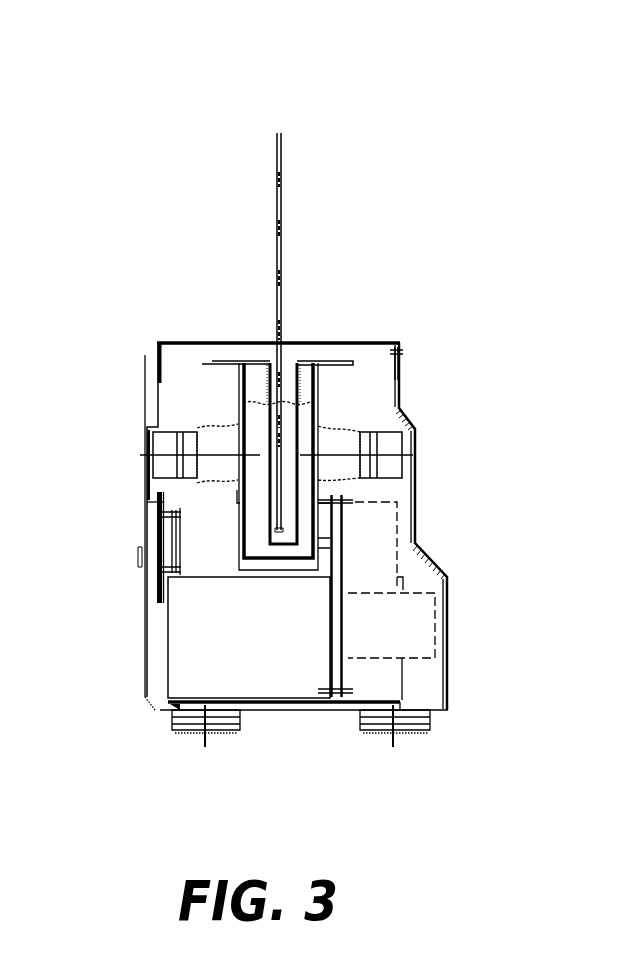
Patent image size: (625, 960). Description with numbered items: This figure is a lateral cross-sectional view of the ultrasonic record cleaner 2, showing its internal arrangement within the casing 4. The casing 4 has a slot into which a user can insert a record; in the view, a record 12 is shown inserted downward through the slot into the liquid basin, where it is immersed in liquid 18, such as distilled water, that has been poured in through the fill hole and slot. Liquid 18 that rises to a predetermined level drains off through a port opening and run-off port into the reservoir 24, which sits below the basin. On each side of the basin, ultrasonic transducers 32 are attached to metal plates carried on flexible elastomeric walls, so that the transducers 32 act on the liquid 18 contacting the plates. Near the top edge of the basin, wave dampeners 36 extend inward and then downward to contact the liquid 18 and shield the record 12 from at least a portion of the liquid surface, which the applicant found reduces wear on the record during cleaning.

The record cleaner 2 is at (420, 162).
The casing 4 is at (367, 342).
The rod 12 is at (277, 187).
The liquid 18 is at (250, 412).
The reservoir 24 is at (197, 673).
The ultrasonic transducer 32 is at (165, 443).
The wave dampener 36 is at (252, 362).